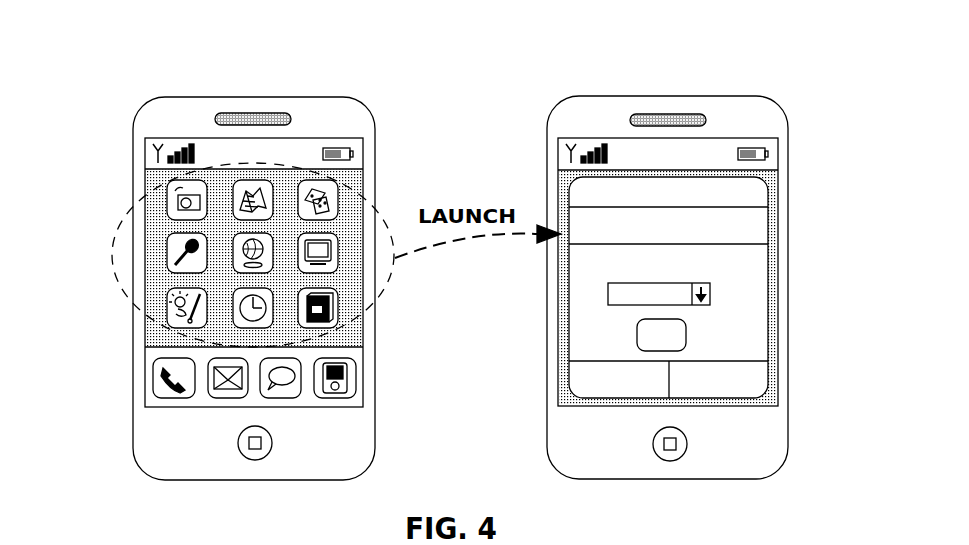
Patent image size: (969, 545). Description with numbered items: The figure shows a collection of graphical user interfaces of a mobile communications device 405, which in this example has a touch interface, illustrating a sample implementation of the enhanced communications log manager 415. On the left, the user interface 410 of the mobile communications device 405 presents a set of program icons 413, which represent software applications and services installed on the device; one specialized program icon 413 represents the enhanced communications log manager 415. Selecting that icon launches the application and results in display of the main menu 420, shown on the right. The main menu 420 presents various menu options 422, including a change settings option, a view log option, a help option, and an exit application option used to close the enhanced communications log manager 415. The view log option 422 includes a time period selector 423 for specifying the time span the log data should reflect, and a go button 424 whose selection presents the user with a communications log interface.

The mobile communications device 405 is at (460, 256).
The user interface 410 is at (146, 192).
The program icons 413 is at (381, 213).
The enhanced communications log manager 415 is at (333, 293).
The main menu 420 is at (768, 206).
The menu options 422 is at (748, 223).
The time period selector 423 is at (680, 294).
The go button 424 is at (685, 335).